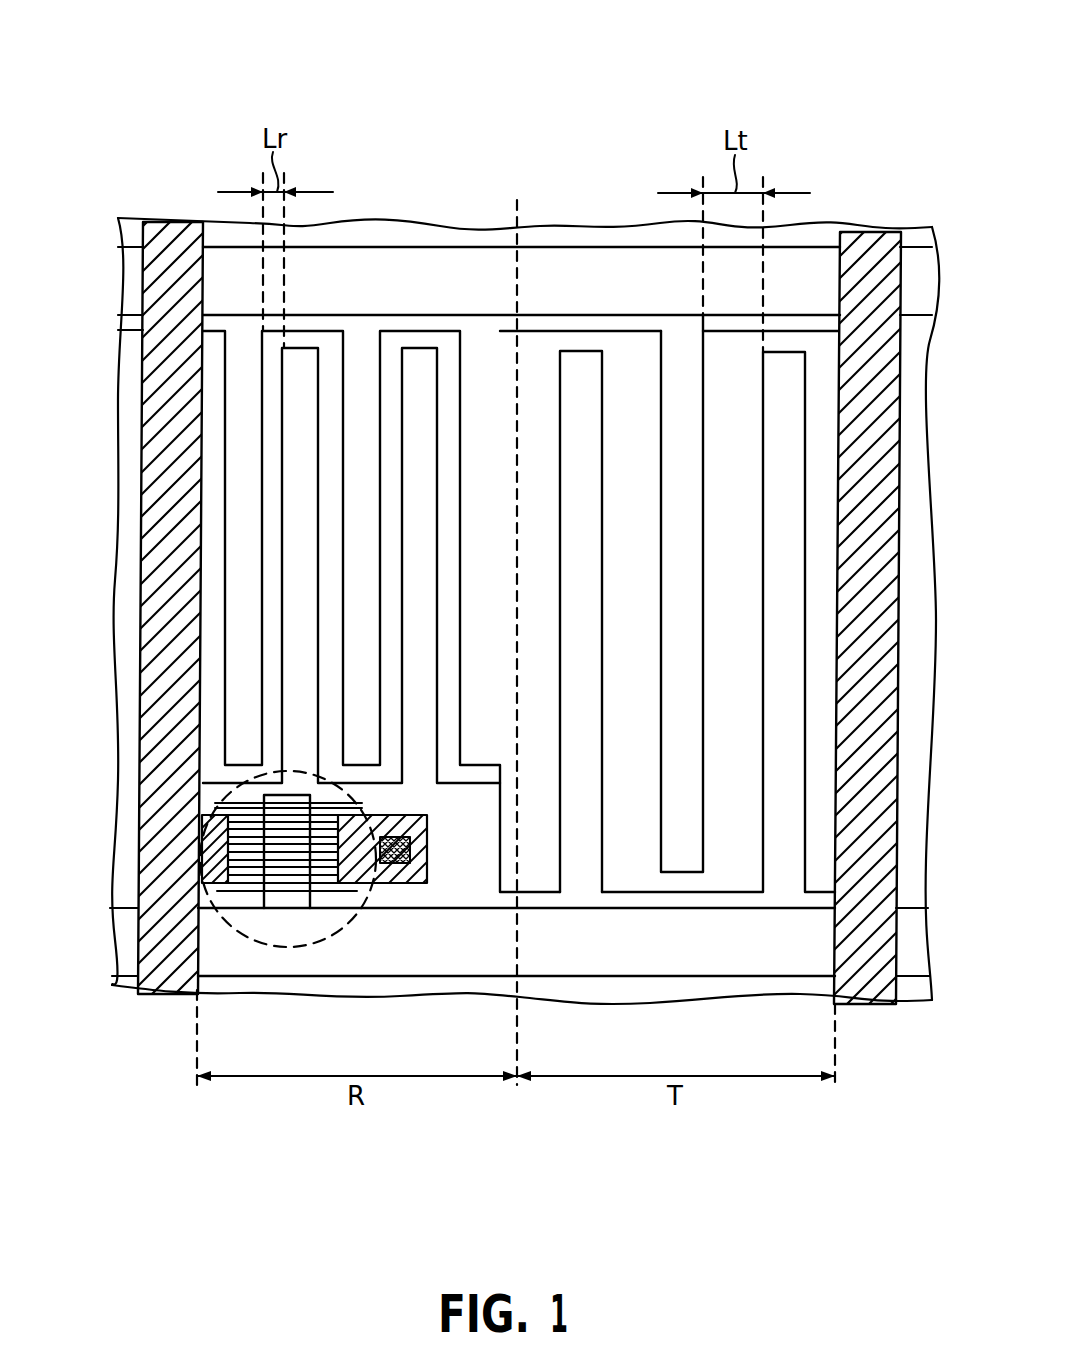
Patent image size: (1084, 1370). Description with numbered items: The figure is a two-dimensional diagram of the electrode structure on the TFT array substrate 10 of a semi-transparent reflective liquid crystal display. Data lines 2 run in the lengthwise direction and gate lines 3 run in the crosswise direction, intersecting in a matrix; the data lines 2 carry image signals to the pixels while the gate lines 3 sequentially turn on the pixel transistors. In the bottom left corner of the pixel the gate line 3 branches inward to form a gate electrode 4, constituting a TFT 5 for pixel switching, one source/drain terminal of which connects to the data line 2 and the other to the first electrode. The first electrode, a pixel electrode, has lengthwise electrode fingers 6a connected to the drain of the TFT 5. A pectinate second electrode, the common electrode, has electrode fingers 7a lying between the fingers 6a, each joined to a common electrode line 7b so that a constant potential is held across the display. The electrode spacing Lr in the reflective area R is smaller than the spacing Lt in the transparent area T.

The TFT array substrate 10 is at (672, 105).
The data line 2 is at (170, 540).
The gate line 3 is at (562, 952).
The gate electrode 4 is at (288, 878).
The TFT 5 is at (342, 932).
The electrode finger 6a is at (582, 365).
The electrode finger 7a is at (683, 855).
The common electrode line 7b is at (425, 280).